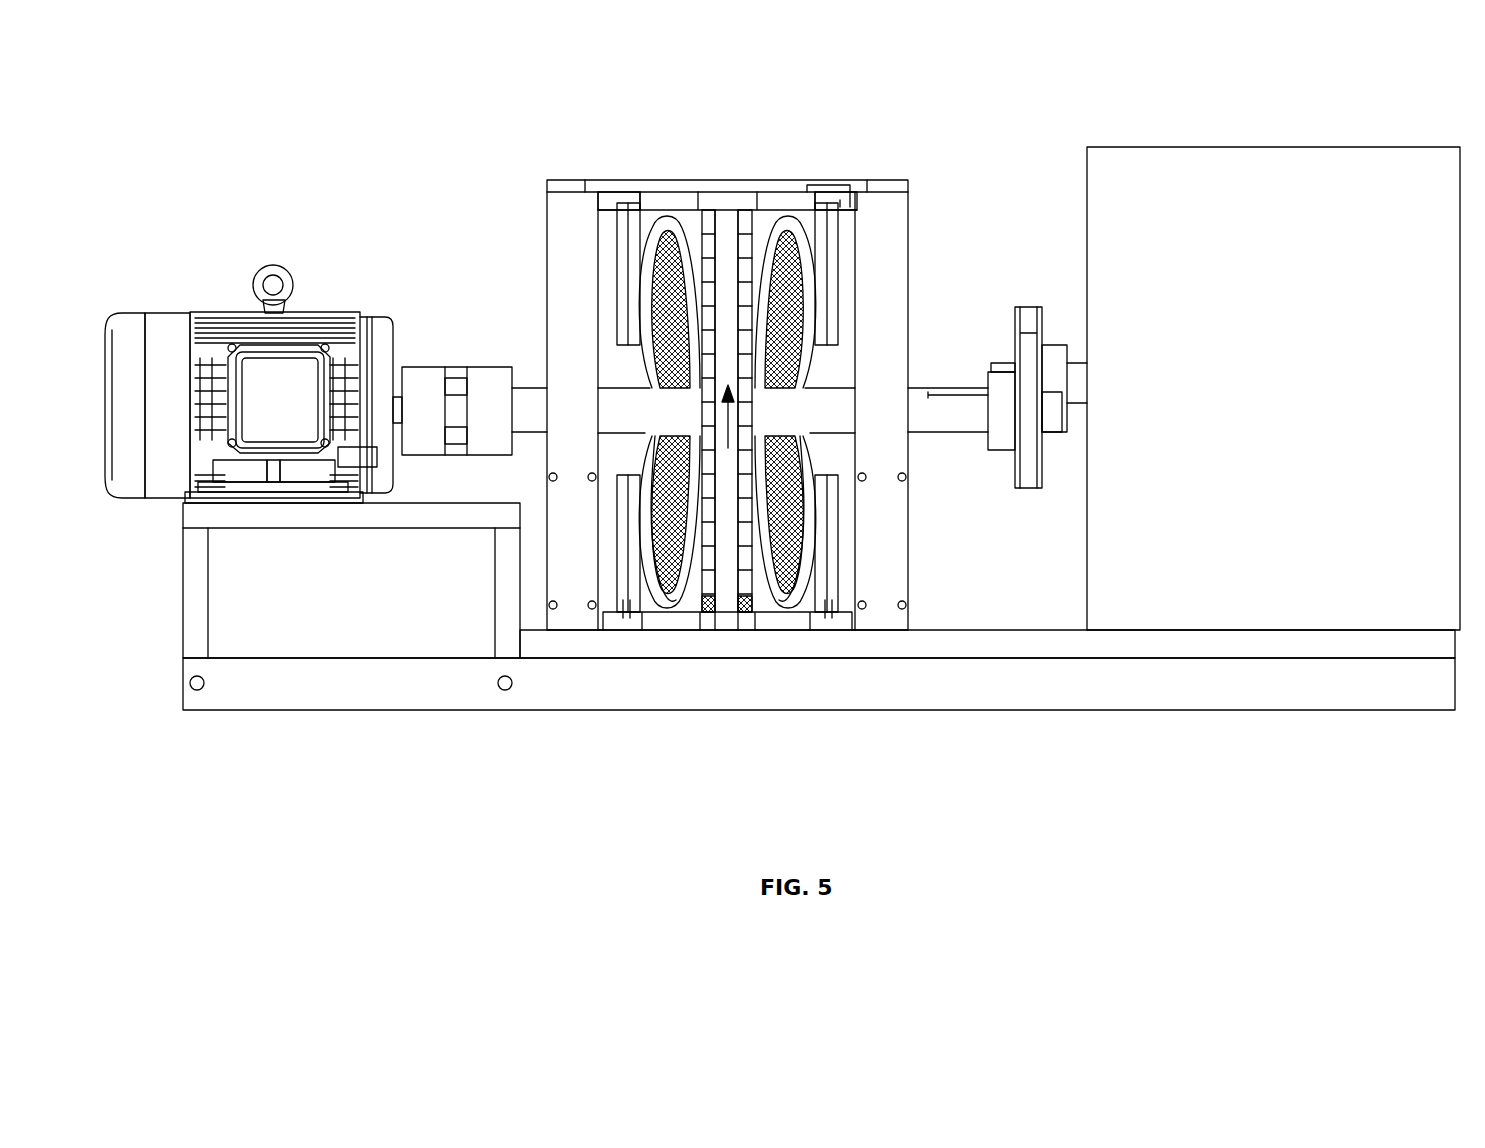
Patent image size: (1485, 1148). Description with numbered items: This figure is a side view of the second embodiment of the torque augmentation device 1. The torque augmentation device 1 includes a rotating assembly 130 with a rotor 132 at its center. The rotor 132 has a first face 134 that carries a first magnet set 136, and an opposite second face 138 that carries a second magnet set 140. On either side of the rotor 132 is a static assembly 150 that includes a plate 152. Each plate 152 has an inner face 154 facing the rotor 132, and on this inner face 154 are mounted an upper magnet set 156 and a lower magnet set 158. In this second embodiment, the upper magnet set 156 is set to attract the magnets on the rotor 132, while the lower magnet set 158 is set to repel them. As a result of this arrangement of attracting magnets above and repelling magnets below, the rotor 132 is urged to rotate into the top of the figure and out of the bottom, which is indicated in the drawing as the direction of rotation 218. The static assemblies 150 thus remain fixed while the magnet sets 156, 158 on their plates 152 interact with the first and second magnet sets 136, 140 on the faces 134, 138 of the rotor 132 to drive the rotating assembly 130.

The torque augmentation device 1 is at (296, 130).
The rotating assembly 130 is at (728, 188).
The rotor 132 is at (727, 602).
The first face 134 is at (755, 602).
The first magnet set 136 is at (767, 600).
The second face 138 is at (703, 602).
The second magnet set 140 is at (677, 600).
The static assembly 150 is at (632, 222).
The plate 152 is at (617, 226).
The inner face 154 is at (645, 253).
The upper magnet set 156 is at (647, 307).
The lower magnet set 158 is at (645, 532).
The direction of rotation 218 is at (735, 405).